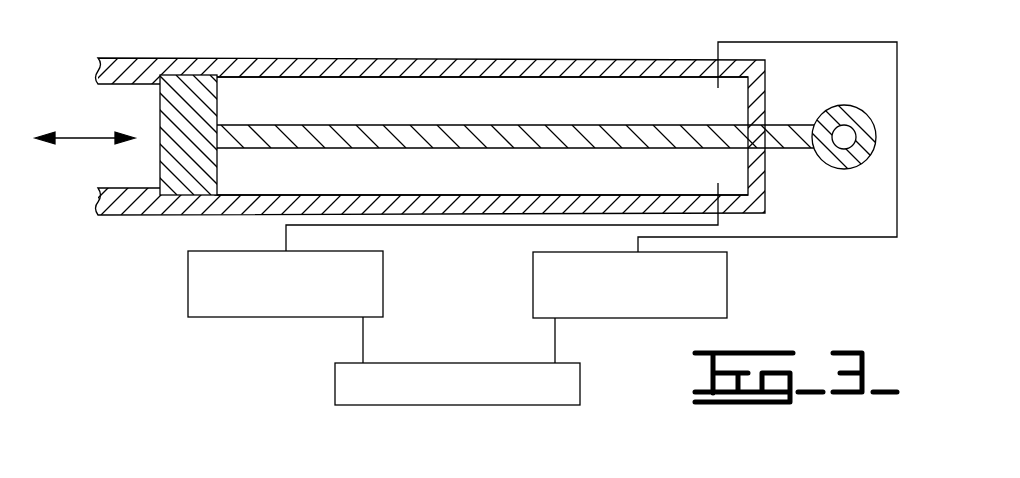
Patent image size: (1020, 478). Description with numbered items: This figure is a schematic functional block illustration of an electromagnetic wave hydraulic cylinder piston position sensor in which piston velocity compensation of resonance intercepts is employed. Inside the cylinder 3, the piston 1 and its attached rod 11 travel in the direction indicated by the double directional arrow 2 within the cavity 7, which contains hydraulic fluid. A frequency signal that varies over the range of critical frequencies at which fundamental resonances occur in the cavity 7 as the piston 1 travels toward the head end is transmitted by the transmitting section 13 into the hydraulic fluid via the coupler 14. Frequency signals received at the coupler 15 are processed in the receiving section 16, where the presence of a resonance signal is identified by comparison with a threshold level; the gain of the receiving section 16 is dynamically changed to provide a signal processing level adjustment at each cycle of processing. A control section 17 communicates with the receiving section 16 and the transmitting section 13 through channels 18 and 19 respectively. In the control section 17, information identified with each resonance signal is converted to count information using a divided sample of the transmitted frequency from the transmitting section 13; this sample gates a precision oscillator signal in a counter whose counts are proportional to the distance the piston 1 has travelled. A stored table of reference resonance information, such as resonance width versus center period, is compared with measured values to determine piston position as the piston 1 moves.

The piston 1 is at (160, 112).
The double directional arrow 2 is at (88, 140).
The cylinder 3 is at (192, 75).
The cavity 7 is at (608, 98).
The rod 11 is at (795, 125).
The transmitting section 13 is at (188, 290).
The coupler 14 is at (720, 226).
The coupler 15 is at (716, 53).
The receiving section 16 is at (533, 290).
The control section 17 is at (335, 392).
The channel 18 is at (555, 348).
The channel 19 is at (363, 348).